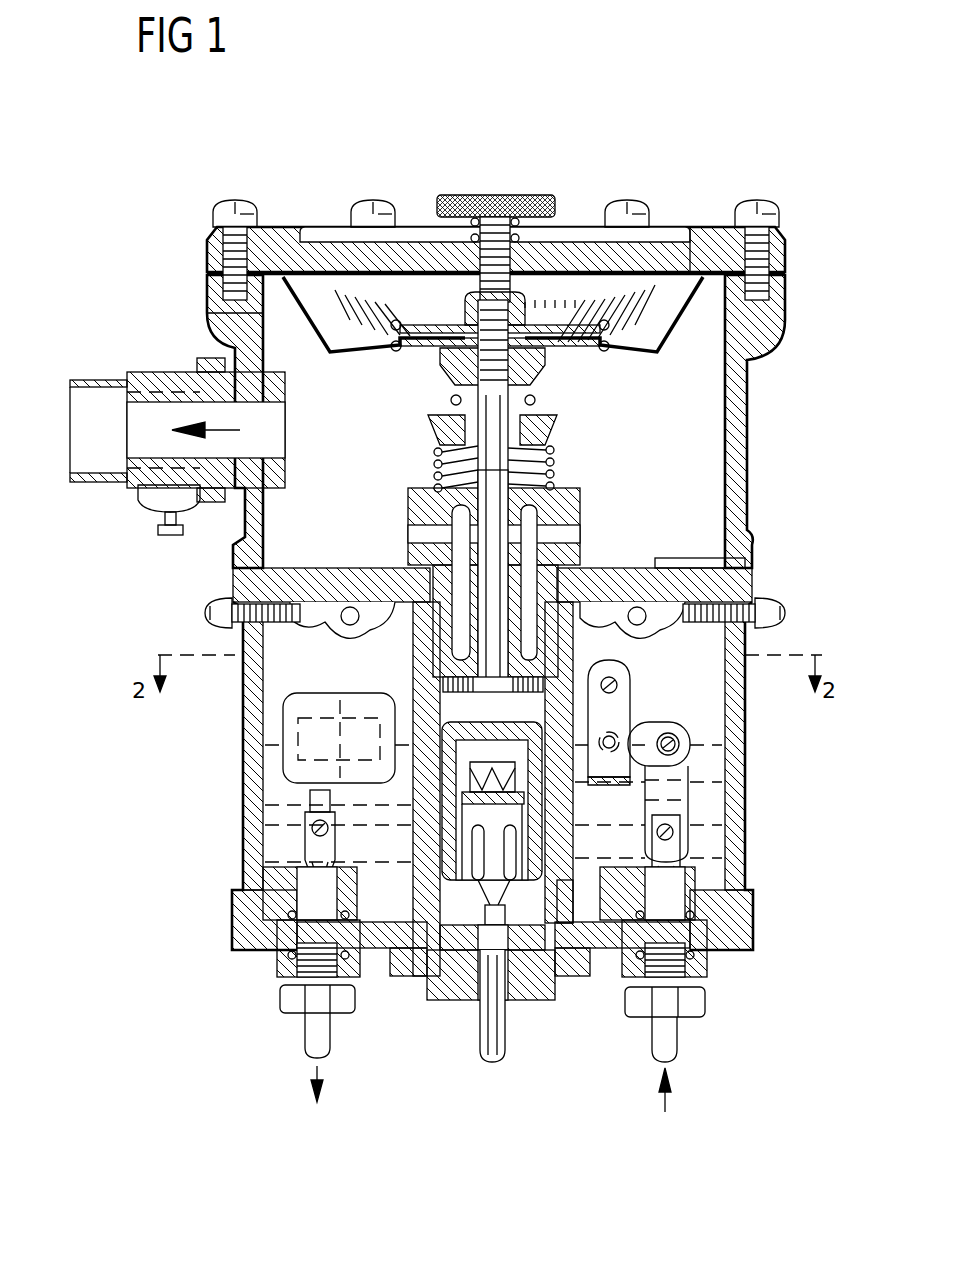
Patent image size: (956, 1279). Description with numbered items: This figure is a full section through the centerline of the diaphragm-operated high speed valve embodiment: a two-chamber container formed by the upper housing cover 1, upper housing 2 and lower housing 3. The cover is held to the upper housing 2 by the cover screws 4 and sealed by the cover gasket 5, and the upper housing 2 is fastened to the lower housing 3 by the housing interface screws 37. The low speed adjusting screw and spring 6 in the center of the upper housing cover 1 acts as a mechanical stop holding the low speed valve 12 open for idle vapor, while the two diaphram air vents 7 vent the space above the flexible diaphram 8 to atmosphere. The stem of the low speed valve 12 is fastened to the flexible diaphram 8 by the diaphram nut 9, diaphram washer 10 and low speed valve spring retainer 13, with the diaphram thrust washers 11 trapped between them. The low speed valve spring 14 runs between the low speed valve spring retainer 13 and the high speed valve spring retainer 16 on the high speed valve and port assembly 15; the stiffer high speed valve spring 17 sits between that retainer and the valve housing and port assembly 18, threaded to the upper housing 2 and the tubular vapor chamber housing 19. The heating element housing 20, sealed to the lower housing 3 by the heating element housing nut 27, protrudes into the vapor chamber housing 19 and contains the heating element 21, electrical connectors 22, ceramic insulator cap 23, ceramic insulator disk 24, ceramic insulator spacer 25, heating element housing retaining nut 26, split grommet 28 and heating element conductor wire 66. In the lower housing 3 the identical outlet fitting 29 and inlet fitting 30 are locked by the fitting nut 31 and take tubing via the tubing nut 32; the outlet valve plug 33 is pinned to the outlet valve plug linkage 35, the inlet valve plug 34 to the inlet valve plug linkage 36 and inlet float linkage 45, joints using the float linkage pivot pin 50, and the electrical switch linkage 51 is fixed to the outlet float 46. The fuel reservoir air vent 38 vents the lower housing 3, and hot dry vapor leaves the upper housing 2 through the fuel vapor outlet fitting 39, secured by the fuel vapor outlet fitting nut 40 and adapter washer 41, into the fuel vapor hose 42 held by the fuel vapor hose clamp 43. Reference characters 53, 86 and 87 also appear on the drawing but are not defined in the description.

The upper housing cover 1 is at (305, 225).
The upper housing 2 is at (748, 400).
The lower housing 3 is at (240, 922).
The cover screws 4 is at (375, 200).
The cover gasket 5 is at (215, 265).
The low speed adjusting screw and spring 6 is at (493, 196).
The diaphram air vents 7 is at (665, 245).
The flexible diaphram 8 is at (668, 350).
The diaphram nut 9 is at (466, 312).
The diaphram washer 10 is at (535, 330).
The diaphram thrust washers 11 is at (393, 327).
The low speed valve 12 is at (510, 395).
The low speed valve spring retainer 13 is at (445, 358).
The low speed valve spring 14 is at (450, 400).
The high speed valve and port assembly 15 is at (525, 575).
The high speed valve spring retainer 16 is at (430, 425).
The high speed valve spring 17 is at (436, 470).
The valve housing and port assembly 18 is at (410, 530).
The vapor chamber housing 19 is at (413, 678).
The heating element housing 20 is at (452, 724).
The heating element 21 is at (478, 780).
The electrical connectors 22 is at (520, 842).
The ceramic insulator cap 23 is at (525, 775).
The ceramic insulator disk 24 is at (470, 798).
The ceramic insulator spacer 25 is at (458, 845).
The heating element housing retaining nut 26 is at (520, 1000).
The heating element housing nut 27 is at (578, 905).
The split grommet 28 is at (483, 945).
The outlet fitting 29 is at (305, 865).
The inlet fitting 30 is at (720, 890).
The fitting nut 31 is at (278, 962).
The tubing nut 32 is at (285, 998).
The outlet valve plug 33 is at (305, 858).
The inlet valve plug 34 is at (690, 858).
The outlet valve plug linkage 35 is at (305, 790).
The inlet valve plug linkage 36 is at (690, 787).
The housing interface screws 37 is at (775, 600).
The fuel reservoir air vent 38 is at (735, 560).
The fuel vapor outlet fitting 39 is at (128, 432).
The fuel vapor outlet fitting nut 40 is at (210, 502).
The adapter washer 41 is at (225, 352).
The fuel vapor hose 42 is at (125, 380).
The fuel vapor hose clamp 43 is at (150, 505).
The inlet float linkage 45 is at (650, 727).
The outlet float 46 is at (338, 693).
The float linkage pivot pin 50 is at (680, 742).
The electrical switch linkage 51 is at (620, 705).
The bracket 53 is at (590, 662).
The heating element conductor wire 66 is at (493, 1062).
The left outlet tube 86 is at (305, 1040).
The right inlet tube 87 is at (680, 1062).